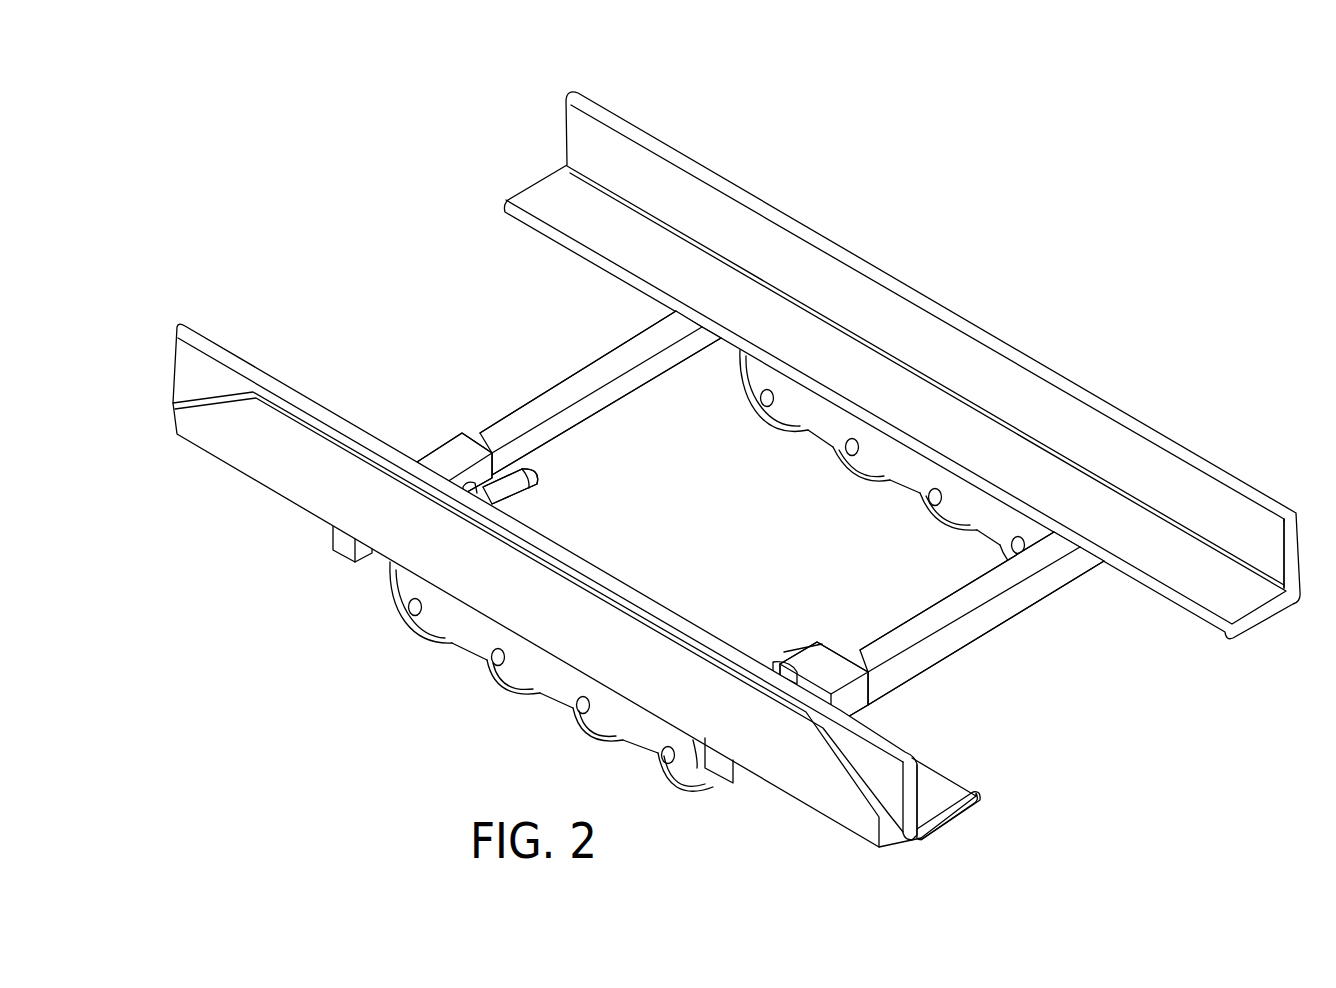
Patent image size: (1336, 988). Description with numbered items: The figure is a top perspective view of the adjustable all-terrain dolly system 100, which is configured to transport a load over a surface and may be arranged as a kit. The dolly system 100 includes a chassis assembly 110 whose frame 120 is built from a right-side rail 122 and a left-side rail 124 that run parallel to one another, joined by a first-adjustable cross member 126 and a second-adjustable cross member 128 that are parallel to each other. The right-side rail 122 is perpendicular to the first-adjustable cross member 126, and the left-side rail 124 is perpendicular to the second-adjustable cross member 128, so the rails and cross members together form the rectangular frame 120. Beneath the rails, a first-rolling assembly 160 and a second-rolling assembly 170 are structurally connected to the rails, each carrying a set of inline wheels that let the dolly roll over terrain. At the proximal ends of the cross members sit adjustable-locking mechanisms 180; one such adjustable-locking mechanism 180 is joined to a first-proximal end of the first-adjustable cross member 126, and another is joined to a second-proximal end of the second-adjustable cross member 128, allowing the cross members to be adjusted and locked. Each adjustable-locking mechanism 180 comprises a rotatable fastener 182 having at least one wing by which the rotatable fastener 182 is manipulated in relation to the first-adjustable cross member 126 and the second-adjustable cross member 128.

The adjustable all-terrain dolly system 100 is at (1167, 158).
The chassis assembly 110 is at (1232, 188).
The frame 120 is at (965, 289).
The right-side rail 122 is at (1268, 614).
The left-side rail 124 is at (808, 797).
The first-adjustable cross member 126 is at (912, 627).
The second-adjustable cross member 128 is at (543, 401).
The first-rolling assembly 160 is at (382, 594).
The second-rolling assembly 170 is at (803, 453).
The adjustable-locking mechanism 180 is at (447, 452).
The rotatable fastener 182 is at (539, 486).